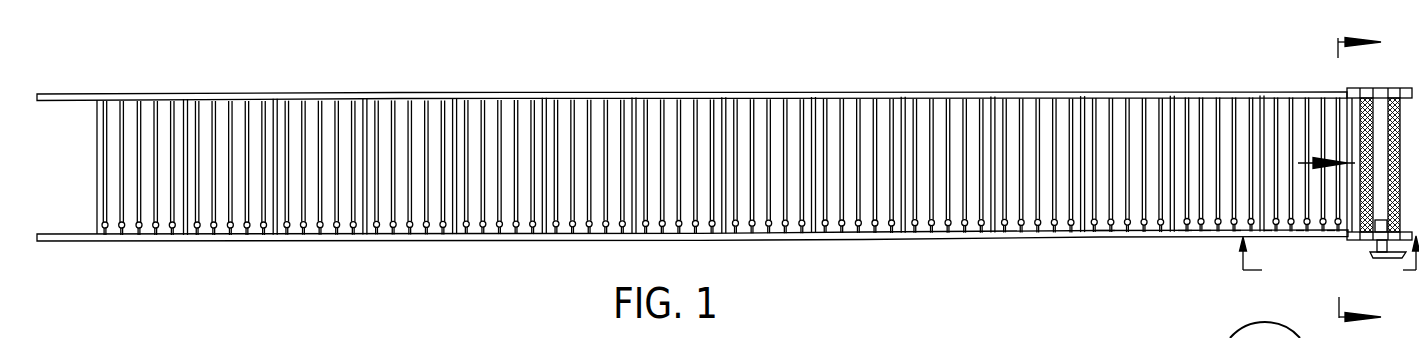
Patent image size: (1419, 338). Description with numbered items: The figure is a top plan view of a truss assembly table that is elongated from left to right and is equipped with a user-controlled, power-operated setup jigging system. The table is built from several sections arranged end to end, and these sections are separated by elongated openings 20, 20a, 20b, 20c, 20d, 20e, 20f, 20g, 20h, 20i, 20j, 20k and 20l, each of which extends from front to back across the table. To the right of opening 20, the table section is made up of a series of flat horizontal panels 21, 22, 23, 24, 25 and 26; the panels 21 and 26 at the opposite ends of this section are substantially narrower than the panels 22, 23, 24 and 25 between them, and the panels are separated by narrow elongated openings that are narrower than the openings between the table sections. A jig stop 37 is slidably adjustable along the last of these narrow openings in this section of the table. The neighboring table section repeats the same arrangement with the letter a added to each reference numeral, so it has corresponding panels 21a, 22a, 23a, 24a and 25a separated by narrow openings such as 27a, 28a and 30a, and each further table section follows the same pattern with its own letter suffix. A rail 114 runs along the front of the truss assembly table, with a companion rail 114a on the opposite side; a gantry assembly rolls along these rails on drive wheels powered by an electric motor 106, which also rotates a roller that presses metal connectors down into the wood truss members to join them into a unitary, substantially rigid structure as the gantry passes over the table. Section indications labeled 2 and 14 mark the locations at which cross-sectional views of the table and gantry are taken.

The rail 114 is at (863, 240).
The rail 114a is at (63, 94).
The elongated opening 20 is at (1263, 99).
The elongated opening 20a is at (1173, 93).
The elongated opening 20b is at (1082, 93).
The elongated opening 20c is at (992, 93).
The elongated opening 20d is at (904, 93).
The elongated opening 20e is at (814, 93).
The elongated opening 20f is at (724, 93).
The elongated opening 20g is at (635, 93).
The elongated opening 20h is at (545, 94).
The elongated opening 20i is at (455, 94).
The elongated opening 20j is at (365, 94).
The elongated opening 20k is at (276, 94).
The elongated opening 20l is at (185, 94).
The flat horizontal panel 21 is at (1268, 232).
The flat horizontal panel 21a is at (1182, 235).
The flat horizontal panel 22 is at (1290, 99).
The flat horizontal panel 22a is at (1195, 99).
The flat horizontal panel 23 is at (1300, 232).
The flat horizontal panel 23a is at (1207, 234).
The flat horizontal panel 24 is at (1315, 99).
The flat horizontal panel 24a is at (1223, 99).
The flat horizontal panel 25 is at (1331, 232).
The flat horizontal panel 25a is at (1237, 232).
The flat horizontal panel 26 is at (1343, 99).
The elongated opening 27a is at (1188, 234).
The elongated opening 28a is at (1102, 257).
The elongated opening 30a is at (1245, 101).
The jig stop 37 is at (1374, 243).
The electric motor 106 is at (1375, 258).
The section line 2- 2 is at (1330, 271).
The section line 14- 14 is at (1342, 181).